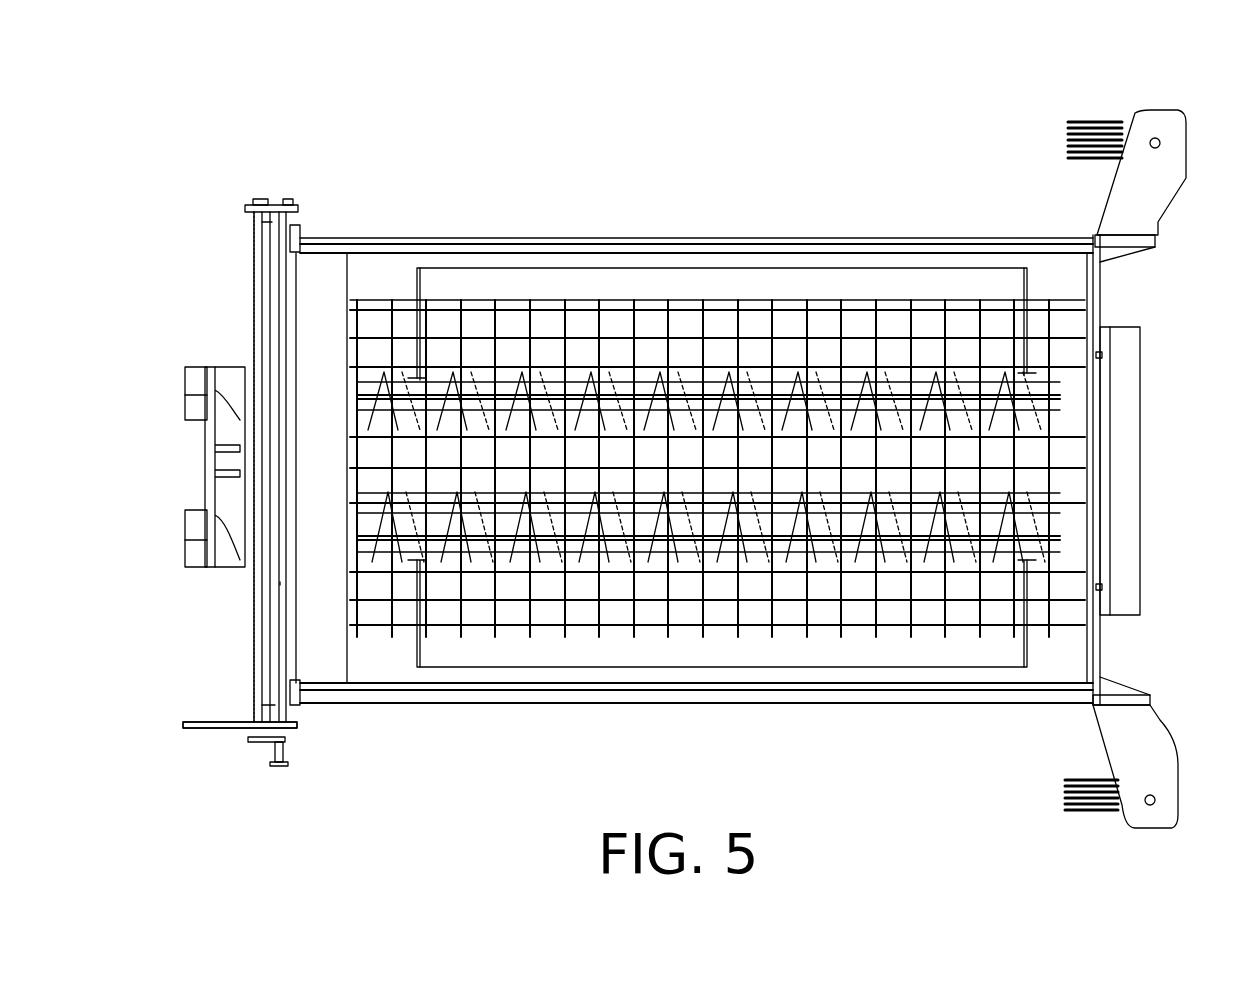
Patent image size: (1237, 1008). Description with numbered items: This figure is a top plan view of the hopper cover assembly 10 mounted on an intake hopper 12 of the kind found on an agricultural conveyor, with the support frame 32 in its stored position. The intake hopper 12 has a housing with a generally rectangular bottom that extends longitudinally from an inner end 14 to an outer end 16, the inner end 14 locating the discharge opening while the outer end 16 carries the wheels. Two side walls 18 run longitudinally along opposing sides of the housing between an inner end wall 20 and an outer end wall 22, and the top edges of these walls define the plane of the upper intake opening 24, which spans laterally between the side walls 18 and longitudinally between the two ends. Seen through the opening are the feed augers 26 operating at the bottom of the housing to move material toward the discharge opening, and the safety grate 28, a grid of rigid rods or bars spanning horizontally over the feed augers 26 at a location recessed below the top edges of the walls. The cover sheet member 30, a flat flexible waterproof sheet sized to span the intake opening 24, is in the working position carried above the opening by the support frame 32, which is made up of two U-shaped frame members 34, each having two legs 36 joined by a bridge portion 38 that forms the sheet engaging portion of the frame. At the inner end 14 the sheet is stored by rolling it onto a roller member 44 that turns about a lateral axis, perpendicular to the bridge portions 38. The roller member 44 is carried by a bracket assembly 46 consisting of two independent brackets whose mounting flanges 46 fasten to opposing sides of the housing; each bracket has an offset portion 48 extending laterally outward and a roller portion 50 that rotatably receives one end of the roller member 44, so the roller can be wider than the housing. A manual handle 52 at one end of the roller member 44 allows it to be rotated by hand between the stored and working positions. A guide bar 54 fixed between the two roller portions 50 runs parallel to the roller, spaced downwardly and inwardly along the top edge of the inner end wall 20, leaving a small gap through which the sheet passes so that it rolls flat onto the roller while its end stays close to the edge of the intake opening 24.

The hopper cover assembly 10 is at (270, 118).
The intake hopper 12 is at (800, 172).
The inner end 14 is at (310, 800).
The outer end 16 is at (1017, 800).
The side walls 18 is at (680, 240).
The inner end wall 20 is at (276, 612).
The outer end wall 22 is at (1100, 472).
The upper intake opening 24 is at (1052, 290).
The feed augers 26 is at (1065, 515).
The safety grate 28 is at (885, 420).
The cover sheet member 30 is at (925, 345).
The support frame 32 is at (388, 283).
The frame members 34 is at (596, 262).
The legs 36 is at (418, 318).
The bridge portion 38 is at (500, 268).
The roller member 44 is at (255, 268).
The bracket assembly / mounting flanges 46 is at (297, 240).
The offset portion 48 is at (265, 220).
The roller portion 50 is at (250, 206).
The manual handle 52 is at (278, 765).
The guide bar 54 is at (282, 582).